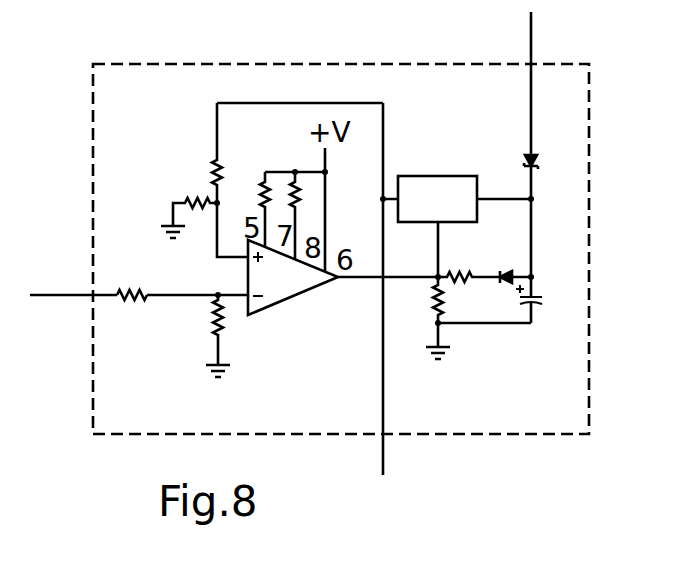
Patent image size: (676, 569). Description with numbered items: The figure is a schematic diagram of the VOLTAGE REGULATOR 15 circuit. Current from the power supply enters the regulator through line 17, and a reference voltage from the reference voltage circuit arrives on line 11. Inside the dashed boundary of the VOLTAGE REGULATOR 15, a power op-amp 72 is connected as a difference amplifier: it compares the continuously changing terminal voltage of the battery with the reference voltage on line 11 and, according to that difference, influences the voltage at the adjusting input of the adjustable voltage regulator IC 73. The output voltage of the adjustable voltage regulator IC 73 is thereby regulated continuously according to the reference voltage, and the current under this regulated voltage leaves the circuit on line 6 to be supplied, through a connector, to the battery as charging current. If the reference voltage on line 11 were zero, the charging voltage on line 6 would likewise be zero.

The VOLTAGE REGULATOR circuit 15 is at (201, 63).
The line 11 is at (48, 293).
The operational amplifier 72 is at (243, 275).
The adjustable voltage regulator IC 73 is at (416, 176).
The line 6 is at (531, 28).
The line 17 is at (384, 462).